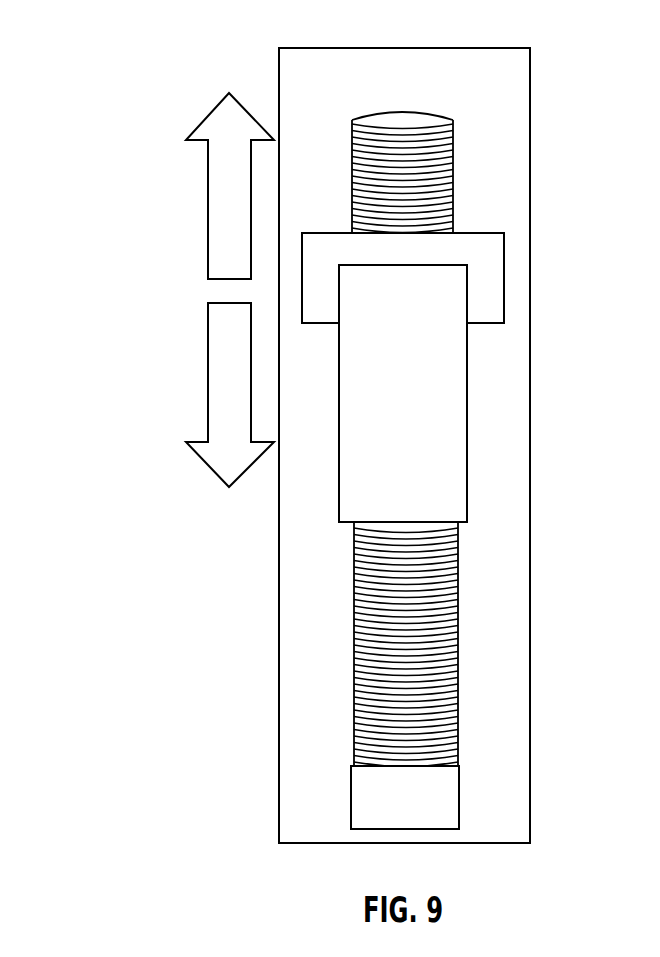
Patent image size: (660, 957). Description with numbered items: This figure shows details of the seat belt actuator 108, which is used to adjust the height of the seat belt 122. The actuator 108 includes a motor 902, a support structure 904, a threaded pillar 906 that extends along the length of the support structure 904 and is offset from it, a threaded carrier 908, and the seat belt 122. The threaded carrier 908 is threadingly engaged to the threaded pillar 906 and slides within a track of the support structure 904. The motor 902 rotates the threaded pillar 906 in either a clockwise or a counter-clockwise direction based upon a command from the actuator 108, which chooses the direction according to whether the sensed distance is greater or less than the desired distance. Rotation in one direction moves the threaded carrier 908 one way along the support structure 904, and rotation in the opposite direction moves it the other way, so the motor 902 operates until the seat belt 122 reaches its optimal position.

The seat belt actuator 108 is at (138, 40).
The support structure 904 is at (534, 631).
The threaded pillar 906 is at (453, 152).
The threaded carrier 908 is at (508, 274).
The seat belt 122 is at (470, 437).
The motor 902 is at (460, 799).